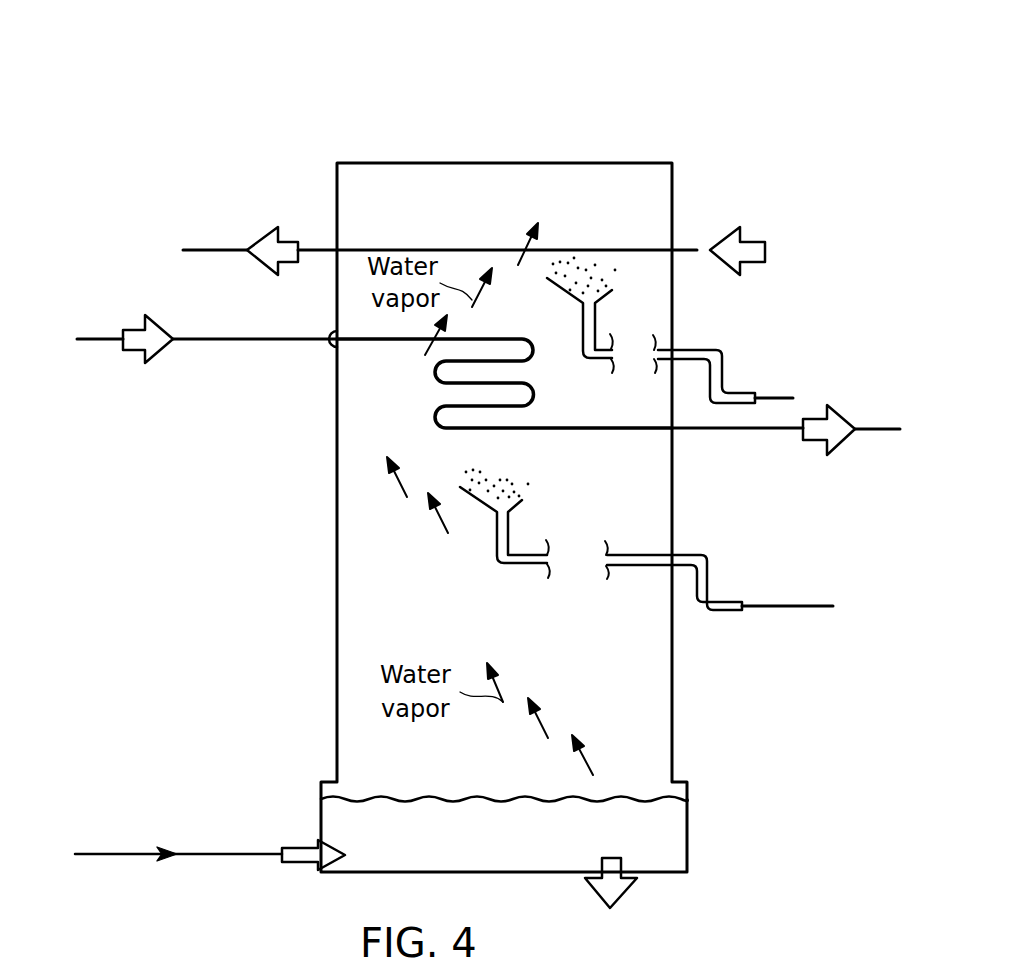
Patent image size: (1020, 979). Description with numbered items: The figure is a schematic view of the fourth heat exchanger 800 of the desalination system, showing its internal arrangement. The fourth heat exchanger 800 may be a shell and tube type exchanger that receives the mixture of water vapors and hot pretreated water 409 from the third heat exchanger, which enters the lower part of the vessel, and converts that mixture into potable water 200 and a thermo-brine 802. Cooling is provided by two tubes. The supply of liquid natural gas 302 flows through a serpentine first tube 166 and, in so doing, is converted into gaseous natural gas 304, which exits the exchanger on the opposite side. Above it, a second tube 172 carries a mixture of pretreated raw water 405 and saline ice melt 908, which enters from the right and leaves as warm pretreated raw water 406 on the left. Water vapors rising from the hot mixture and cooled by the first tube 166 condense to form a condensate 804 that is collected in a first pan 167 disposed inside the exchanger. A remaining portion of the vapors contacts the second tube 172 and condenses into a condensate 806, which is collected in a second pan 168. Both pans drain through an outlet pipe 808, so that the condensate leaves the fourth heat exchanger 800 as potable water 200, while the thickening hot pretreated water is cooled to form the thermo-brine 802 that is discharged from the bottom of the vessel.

The fourth heat exchanger 800 is at (775, 46).
The second tube 172 is at (480, 250).
The warm pretreated raw water 406 is at (290, 242).
The pretreated raw water 405 is at (743, 214).
The saline ice melt 908 is at (752, 242).
The liquid natural gas 302 is at (135, 330).
The first tube 166 is at (395, 342).
The gaseous natural gas 304 is at (843, 412).
The second pan 168 is at (603, 292).
The condensate 806 is at (587, 283).
The condensate 804 is at (512, 483).
The first pan 167 is at (522, 505).
The outlet pipe 808 is at (687, 553).
The potable water 200 is at (768, 605).
The mixture of water vapors and hot pretreated water 409 is at (302, 848).
The thermo-brine 802 is at (627, 888).